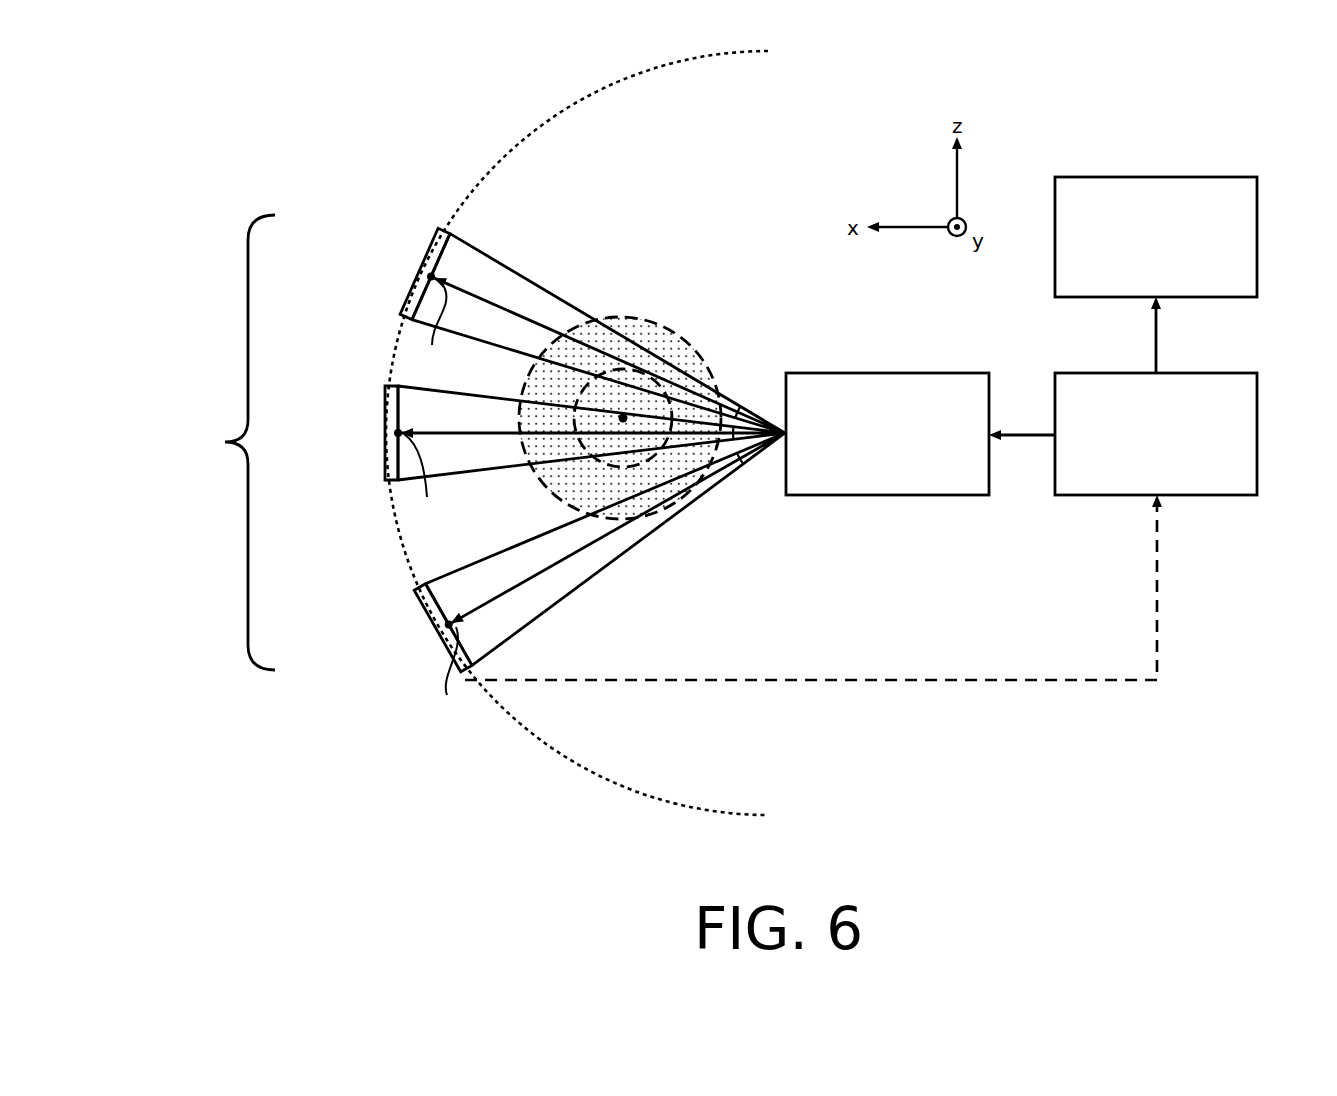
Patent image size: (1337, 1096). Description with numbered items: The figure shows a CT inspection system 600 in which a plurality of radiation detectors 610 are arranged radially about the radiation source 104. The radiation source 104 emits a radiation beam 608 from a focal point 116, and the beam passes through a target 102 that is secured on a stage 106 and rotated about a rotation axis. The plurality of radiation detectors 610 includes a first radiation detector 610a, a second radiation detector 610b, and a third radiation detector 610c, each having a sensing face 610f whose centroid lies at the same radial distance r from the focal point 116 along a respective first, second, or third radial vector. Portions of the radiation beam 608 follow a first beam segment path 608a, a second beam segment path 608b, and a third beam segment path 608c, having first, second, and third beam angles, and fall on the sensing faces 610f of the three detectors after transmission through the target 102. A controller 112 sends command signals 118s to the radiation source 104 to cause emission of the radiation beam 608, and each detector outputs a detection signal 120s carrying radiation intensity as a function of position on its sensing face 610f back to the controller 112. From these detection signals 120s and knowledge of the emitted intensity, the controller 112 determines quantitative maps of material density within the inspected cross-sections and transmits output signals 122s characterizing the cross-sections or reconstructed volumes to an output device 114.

The CT inspection system 600 is at (1157, 718).
The radiation beam 608 is at (895, 108).
The first beam segment path 608a is at (598, 333).
The second beam segment path 608b is at (601, 433).
The third beam segment path 608c is at (606, 579).
The plurality of radiation detectors 610 is at (226, 442).
The first radiation detector 610a is at (437, 240).
The second radiation detector 610b is at (385, 405).
The third radiation detector 610c is at (418, 605).
The sensing face 610f is at (453, 243).
The target 102 is at (647, 320).
The stage 106 is at (660, 382).
The focal point 116 is at (787, 433).
The radiation source 104 is at (887, 434).
The controller 112 is at (1156, 434).
The output device 114 is at (1156, 237).
The command signals 118s is at (1018, 432).
The output signals 122s is at (1158, 322).
The detection signal 120s is at (781, 680).